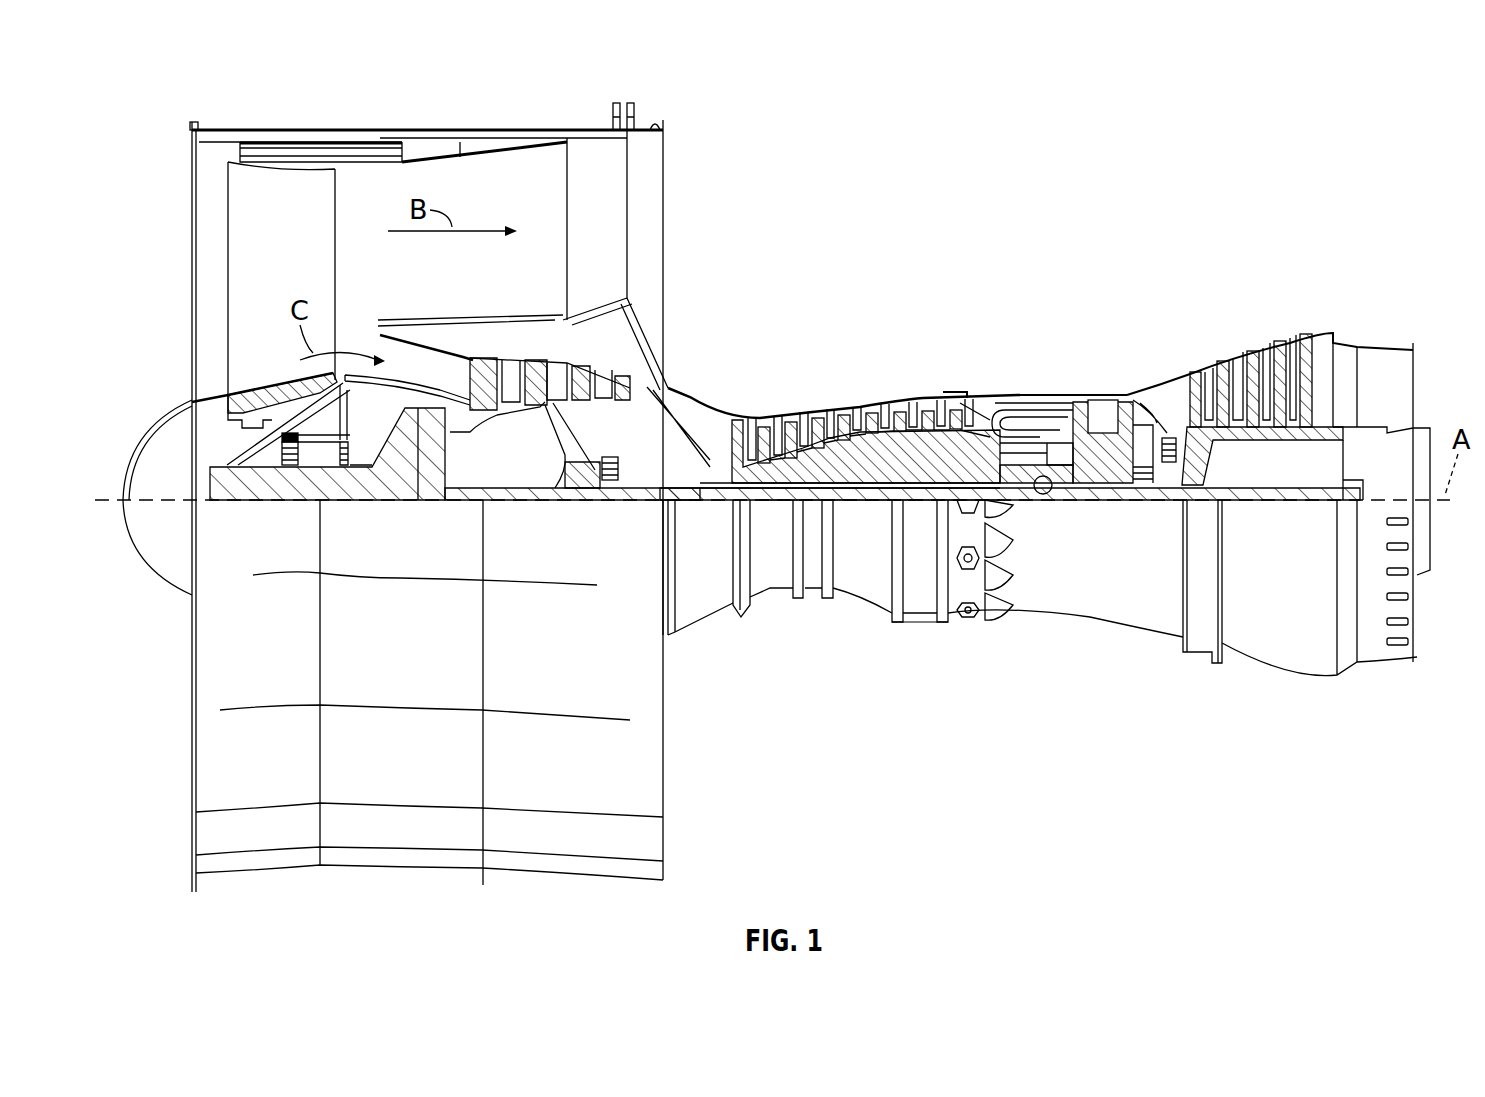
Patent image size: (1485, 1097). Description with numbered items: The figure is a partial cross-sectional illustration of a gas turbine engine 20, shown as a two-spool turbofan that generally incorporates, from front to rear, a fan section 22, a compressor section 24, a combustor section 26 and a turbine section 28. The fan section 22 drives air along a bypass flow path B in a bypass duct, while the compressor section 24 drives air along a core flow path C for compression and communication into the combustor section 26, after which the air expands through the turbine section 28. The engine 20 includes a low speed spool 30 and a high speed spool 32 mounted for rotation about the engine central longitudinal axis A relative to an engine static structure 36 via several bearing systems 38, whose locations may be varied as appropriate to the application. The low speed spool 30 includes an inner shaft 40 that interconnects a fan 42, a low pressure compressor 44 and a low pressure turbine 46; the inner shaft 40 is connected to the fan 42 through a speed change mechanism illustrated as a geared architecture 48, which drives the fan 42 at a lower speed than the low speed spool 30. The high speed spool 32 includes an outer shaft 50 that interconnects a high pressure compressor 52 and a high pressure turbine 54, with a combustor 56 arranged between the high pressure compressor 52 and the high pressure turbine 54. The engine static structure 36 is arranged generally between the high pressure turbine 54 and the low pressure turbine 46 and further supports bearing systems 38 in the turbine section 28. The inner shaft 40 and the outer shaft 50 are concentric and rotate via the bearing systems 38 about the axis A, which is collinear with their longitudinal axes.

The gas turbine engine 20 is at (1242, 164).
The fan section 22 is at (298, 112).
The compressor section 24 is at (855, 351).
The combustor section 26 is at (1010, 351).
The turbine section 28 is at (1170, 331).
The low speed spool 30 is at (883, 510).
The high speed spool 32 is at (953, 437).
The engine static structure 36 is at (925, 627).
The bearing systems 38 is at (290, 467).
The inner shaft 40 is at (675, 493).
The fan 42 is at (309, 264).
The low pressure compressor 44 is at (580, 377).
The low pressure turbine 46 is at (1270, 353).
The geared architecture 48 is at (432, 470).
The outer shaft 50 is at (1045, 493).
The high pressure compressor 52 is at (843, 470).
The high pressure turbine 54 is at (1103, 393).
The combustor 56 is at (1027, 417).